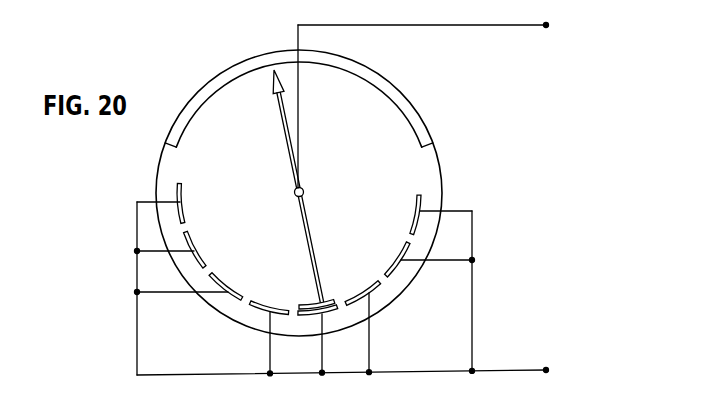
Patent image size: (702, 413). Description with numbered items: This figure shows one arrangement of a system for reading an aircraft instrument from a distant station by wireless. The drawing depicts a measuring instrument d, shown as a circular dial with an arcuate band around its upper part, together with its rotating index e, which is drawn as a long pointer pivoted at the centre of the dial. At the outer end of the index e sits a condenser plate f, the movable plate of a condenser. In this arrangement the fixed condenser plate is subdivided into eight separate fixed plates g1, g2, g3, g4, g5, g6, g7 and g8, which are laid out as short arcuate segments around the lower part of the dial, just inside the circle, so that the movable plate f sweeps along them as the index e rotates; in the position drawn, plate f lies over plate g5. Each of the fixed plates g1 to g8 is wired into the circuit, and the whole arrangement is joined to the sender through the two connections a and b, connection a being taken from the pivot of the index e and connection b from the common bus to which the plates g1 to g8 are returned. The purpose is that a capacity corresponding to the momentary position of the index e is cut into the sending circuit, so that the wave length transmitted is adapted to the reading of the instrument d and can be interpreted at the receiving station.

The connection to the sender a is at (431, 101).
The connection to the sender b is at (350, 291).
The measuring instrument d is at (433, 165).
The index e is at (287, 128).
The condenser plate f is at (331, 298).
The fixed plate g1 is at (182, 186).
The fixed plate g2 is at (195, 242).
The fixed plate g3 is at (223, 275).
The fixed plate g4 is at (269, 327).
The fixed plate g5 is at (335, 313).
The fixed plate g6 is at (380, 280).
The fixed plate g7 is at (406, 248).
The fixed plate g8 is at (416, 198).